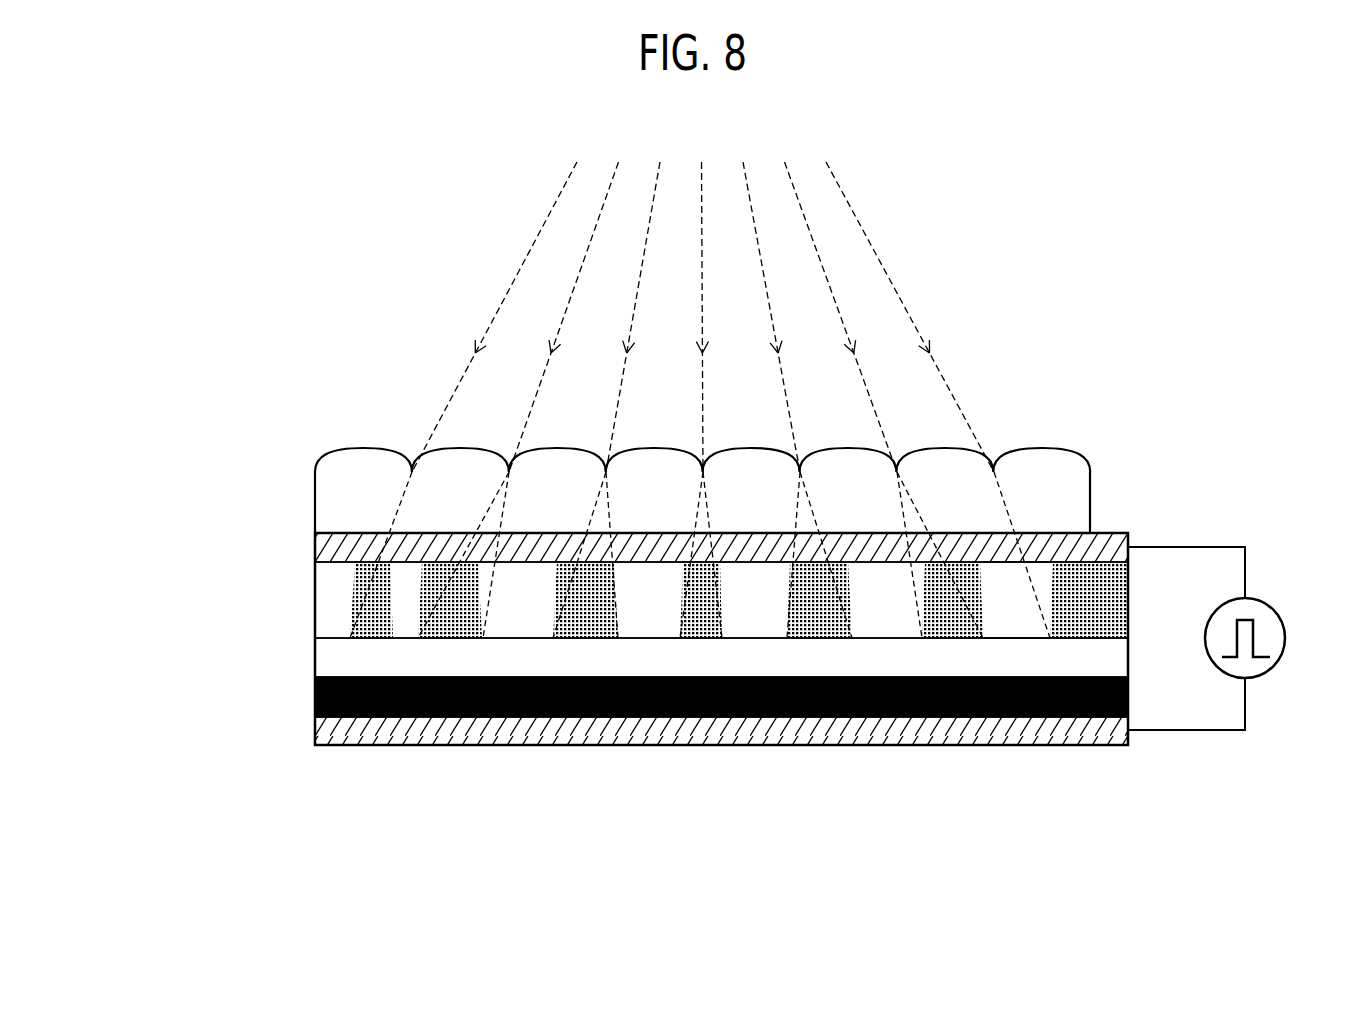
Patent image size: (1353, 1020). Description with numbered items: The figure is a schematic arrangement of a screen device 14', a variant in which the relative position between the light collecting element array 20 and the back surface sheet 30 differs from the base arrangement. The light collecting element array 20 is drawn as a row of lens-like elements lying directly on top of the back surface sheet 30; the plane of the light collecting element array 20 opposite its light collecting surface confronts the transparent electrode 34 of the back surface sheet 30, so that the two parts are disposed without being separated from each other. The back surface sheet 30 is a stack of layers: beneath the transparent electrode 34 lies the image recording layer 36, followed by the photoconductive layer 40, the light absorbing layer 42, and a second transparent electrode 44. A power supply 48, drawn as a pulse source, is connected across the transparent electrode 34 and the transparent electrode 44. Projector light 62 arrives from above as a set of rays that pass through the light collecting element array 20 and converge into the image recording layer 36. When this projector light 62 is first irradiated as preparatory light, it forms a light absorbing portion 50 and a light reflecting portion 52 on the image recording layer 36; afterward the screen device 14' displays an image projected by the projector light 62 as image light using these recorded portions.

The screen device 14' is at (626, 600).
The light collecting element array 20 is at (313, 491).
The back surface sheet 30 is at (927, 768).
The transparent electrode 34 is at (313, 544).
The image recording layer 36 is at (694, 600).
The photoconductive layer 40 is at (313, 658).
The light absorbing layer 42 is at (313, 691).
The transparent electrode 44 is at (313, 728).
The power supply 48 is at (1285, 630).
The light absorbing portion 50 is at (1010, 588).
The light reflecting portion 52 is at (1090, 621).
The projector light 62 is at (868, 238).